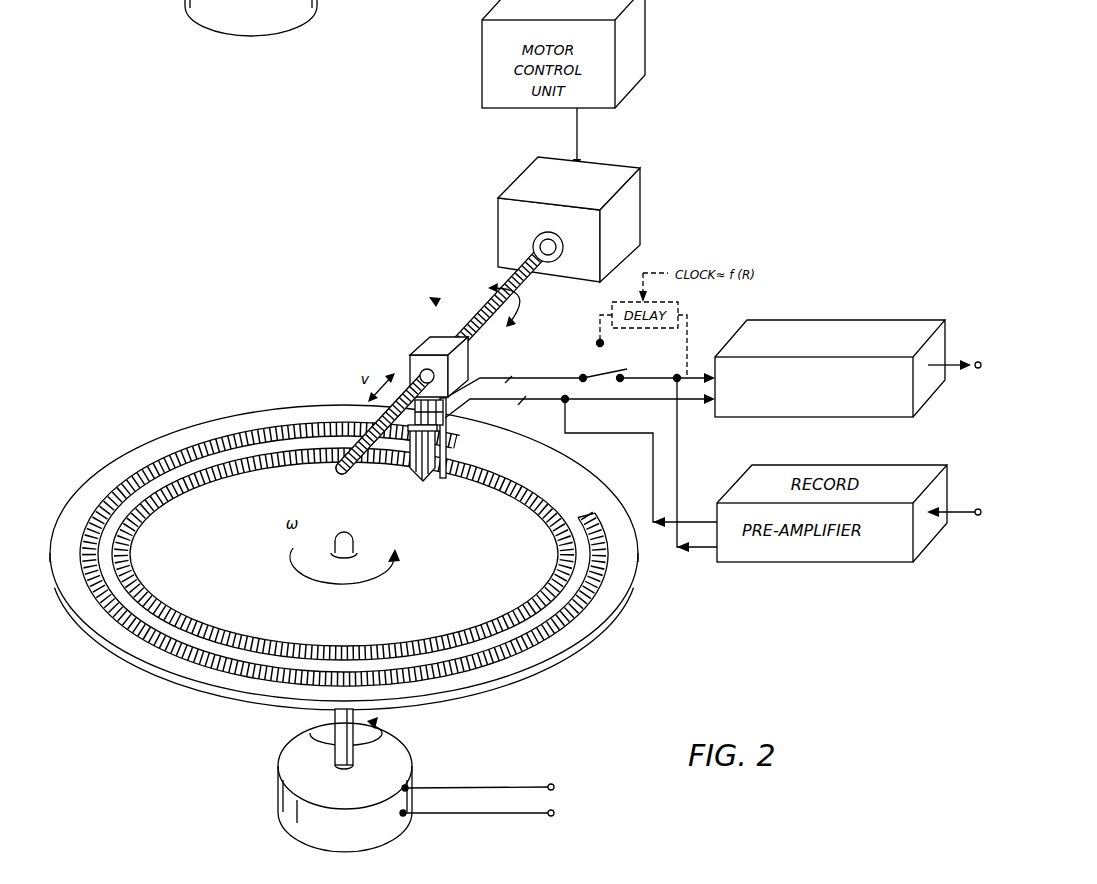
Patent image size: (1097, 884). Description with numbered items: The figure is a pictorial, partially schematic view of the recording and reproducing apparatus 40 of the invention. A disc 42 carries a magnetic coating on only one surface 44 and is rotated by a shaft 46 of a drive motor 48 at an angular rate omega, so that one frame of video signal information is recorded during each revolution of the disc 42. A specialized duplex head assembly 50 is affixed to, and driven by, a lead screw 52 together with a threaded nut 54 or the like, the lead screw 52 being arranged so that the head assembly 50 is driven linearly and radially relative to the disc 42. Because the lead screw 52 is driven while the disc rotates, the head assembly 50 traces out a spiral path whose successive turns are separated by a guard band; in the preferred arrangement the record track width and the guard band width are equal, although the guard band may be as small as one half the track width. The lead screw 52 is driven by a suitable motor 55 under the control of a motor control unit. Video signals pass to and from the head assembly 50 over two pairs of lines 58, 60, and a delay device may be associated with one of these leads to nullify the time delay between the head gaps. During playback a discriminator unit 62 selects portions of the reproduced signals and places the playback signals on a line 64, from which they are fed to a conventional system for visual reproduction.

The recording and reproducing apparatus 40 is at (435, 300).
The disc 42 is at (124, 460).
The surface 44 is at (247, 490).
The shaft 46 is at (360, 755).
The drive motor 48 is at (278, 770).
The head assembly 50 is at (445, 462).
The lead screw 52 is at (493, 310).
The threaded nut 54 is at (420, 348).
The motor 55 is at (613, 167).
The lines 58 is at (552, 378).
The lines 60 is at (547, 403).
The discriminator unit 62 is at (808, 318).
The line 64 is at (954, 368).